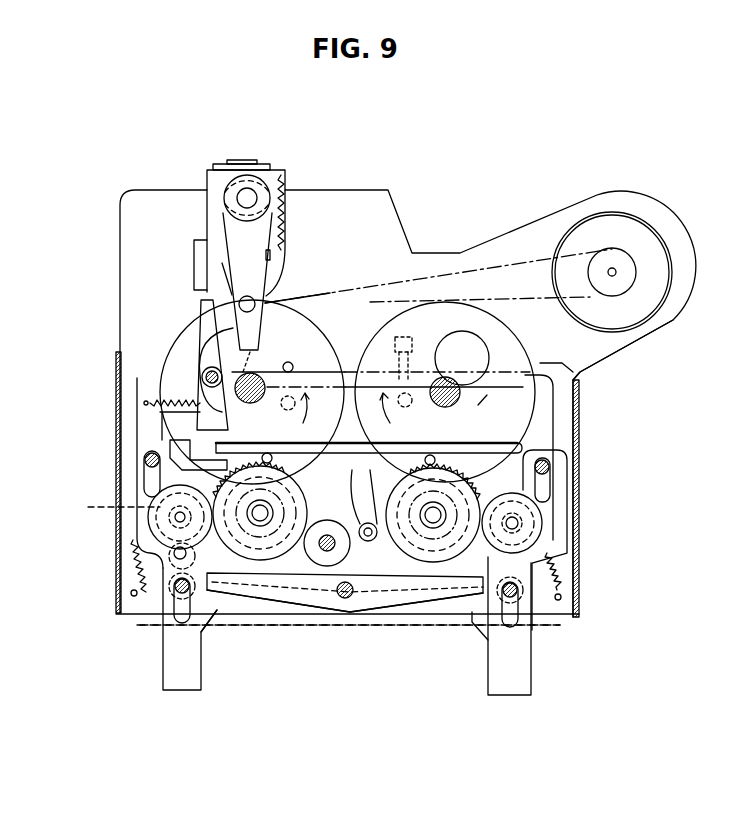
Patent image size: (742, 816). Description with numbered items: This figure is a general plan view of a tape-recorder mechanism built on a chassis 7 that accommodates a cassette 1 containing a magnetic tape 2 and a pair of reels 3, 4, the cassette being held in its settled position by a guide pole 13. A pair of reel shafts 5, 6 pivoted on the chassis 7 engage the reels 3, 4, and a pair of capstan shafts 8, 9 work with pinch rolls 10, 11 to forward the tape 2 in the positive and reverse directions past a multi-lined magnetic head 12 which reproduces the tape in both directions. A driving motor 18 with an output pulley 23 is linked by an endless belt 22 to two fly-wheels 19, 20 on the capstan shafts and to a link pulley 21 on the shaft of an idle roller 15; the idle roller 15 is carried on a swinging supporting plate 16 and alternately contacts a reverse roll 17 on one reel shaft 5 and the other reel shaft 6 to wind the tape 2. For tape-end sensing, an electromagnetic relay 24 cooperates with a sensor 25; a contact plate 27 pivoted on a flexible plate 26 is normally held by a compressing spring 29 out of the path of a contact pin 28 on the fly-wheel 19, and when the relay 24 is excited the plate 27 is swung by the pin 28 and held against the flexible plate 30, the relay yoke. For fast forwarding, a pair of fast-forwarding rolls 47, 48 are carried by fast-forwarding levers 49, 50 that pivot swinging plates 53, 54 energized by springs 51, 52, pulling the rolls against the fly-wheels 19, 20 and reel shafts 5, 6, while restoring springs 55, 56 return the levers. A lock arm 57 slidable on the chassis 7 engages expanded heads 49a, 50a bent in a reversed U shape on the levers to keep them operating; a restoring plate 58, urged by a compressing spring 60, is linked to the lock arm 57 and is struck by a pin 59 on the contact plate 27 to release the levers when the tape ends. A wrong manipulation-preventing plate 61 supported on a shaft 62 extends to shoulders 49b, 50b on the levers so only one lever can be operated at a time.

The cassette 1 is at (387, 627).
The magnetic tape 2 is at (487, 396).
The reel 3 is at (317, 577).
The reel 4 is at (420, 620).
The reel shaft 5 is at (262, 522).
The reel shaft 6 is at (437, 525).
The chassis 7 is at (590, 590).
The capstan shaft 8 is at (258, 378).
The capstan shaft 9 is at (443, 406).
The pinch roll 10 is at (203, 312).
The pinch roll 11 is at (490, 355).
The multi-lined magnetic head 12 is at (358, 337).
The guide pole 13 is at (366, 379).
The idle roller 15 is at (372, 536).
The swinging supporting plate 16 is at (356, 478).
The reverse roll 17 is at (353, 591).
The driving motor 18 is at (612, 238).
The fly-wheel 19 is at (170, 345).
The fly-wheel 20 is at (588, 372).
The link pulley 21 is at (433, 527).
The endless belt 22 is at (541, 258).
The output pulley 23 is at (627, 268).
The electromagnetic relay 24 is at (215, 190).
The sensor 25 is at (412, 332).
The flexible plate 26 is at (265, 178).
The contact plate 27 is at (238, 245).
The contact pin 28 is at (292, 364).
The compressing spring 29 is at (288, 208).
The flexible plate 30 is at (197, 268).
The fast-forwarding roll 47 is at (175, 520).
The fast-forwarding roll 48 is at (535, 525).
The fast-forwarding lever 49 is at (172, 668).
The expanded head 49a is at (150, 443).
The shoulder 49b is at (220, 620).
The fast-forwarding lever 50 is at (520, 688).
The expanded head 50a is at (507, 470).
The shoulder 50b is at (480, 628).
The spring 51 is at (150, 470).
The spring 52 is at (552, 472).
The swinging plate 53 is at (108, 507).
The swinging plate 54 is at (545, 548).
The restoring spring 55 is at (135, 578).
The restoring spring 56 is at (553, 587).
The lock arm 57 is at (345, 442).
The restoring plate 58 is at (150, 360).
The pin 59 is at (283, 300).
The compressing spring 60 is at (144, 403).
The wrong manipulation-preventing plate 61 is at (348, 620).
The shaft 62 is at (347, 600).